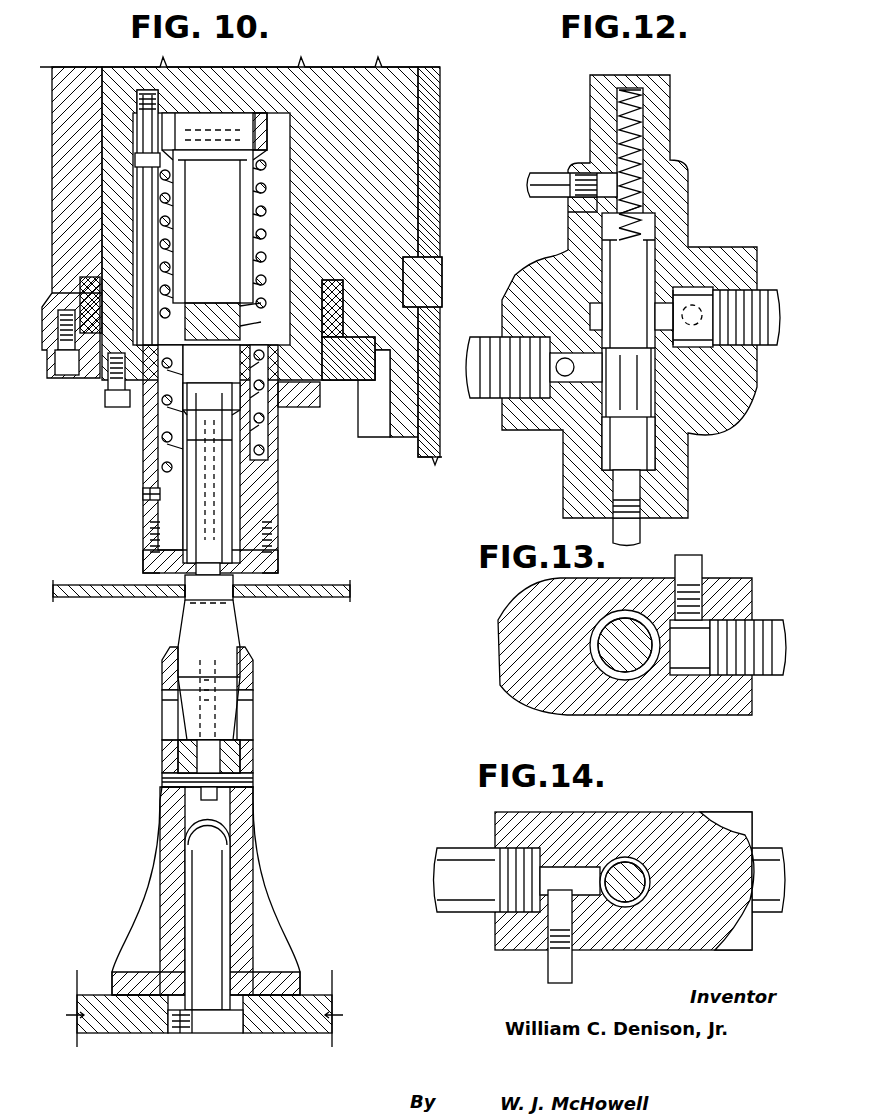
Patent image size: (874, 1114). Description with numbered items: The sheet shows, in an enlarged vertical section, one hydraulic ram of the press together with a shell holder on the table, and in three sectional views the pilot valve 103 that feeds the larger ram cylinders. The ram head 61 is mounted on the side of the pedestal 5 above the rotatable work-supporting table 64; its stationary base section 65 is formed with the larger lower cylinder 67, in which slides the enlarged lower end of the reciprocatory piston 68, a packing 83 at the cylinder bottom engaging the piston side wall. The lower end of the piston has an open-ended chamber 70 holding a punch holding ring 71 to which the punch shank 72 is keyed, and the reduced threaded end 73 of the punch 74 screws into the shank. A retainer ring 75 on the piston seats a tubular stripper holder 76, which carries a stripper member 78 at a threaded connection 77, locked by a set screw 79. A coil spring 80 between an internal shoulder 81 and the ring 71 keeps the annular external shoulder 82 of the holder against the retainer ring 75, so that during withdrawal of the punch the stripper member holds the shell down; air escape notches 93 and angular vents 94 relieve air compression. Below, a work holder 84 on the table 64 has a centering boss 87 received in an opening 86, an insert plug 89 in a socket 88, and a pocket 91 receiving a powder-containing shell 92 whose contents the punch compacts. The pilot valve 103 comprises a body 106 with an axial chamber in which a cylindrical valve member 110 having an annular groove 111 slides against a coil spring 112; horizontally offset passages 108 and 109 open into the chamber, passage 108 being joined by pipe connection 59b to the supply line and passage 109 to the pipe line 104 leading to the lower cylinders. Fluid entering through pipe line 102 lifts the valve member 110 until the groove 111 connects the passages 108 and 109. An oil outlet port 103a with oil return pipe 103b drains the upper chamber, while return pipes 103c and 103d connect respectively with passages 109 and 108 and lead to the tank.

In FIG. 10, the pedestal 5 is at (442, 157).
In FIG. 10, the ram head 61 is at (52, 207).
In FIG. 10, the work-supporting table 64 is at (318, 995).
In FIG. 10, the stationary base section 65 is at (408, 224).
In FIG. 10, the lower cylinder 67 is at (100, 238).
In FIG. 10, the reciprocatory piston 68 is at (113, 141).
In FIG. 10, the open-ended chamber 70 is at (140, 263).
In FIG. 10, the punch holding ring 71 is at (270, 122).
In FIG. 10, the punch shank 72 is at (214, 226).
In FIG. 10, the reduced threaded end 73 is at (128, 407).
In FIG. 10, the punch 74 is at (215, 463).
In FIG. 10, the retainer ring 75 is at (318, 400).
In FIG. 10, the tubular stripper holder 76 is at (268, 478).
In FIG. 10, the threaded connection 77 is at (150, 540).
In FIG. 10, the stripper member 78 is at (268, 535).
In FIG. 10, the set screw 79 is at (143, 493).
In FIG. 10, the coil spring 80 is at (221, 243).
In FIG. 10, the internal shoulder 81 is at (143, 467).
In FIG. 10, the annular external shoulder 82 is at (118, 368).
In FIG. 10, the packing 83 is at (338, 330).
In FIG. 10, the work holder 84 is at (255, 836).
In FIG. 10, the opening 86 is at (188, 1035).
In FIG. 10, the centering boss 87 is at (236, 1035).
In FIG. 10, the socket 88 is at (235, 757).
In FIG. 10, the insert plug 89 is at (197, 758).
In FIG. 10, the pocket 91 is at (178, 725).
In FIG. 10, the powder-containing shell 92 is at (225, 710).
In FIG. 10, the air escape notch 93 is at (270, 566).
In FIG. 10, the angular vent 94 is at (150, 566).
In FIG. 12, the pipe line 102 is at (640, 532).
In FIG. 12, the pilot valve 103 is at (717, 413).
In FIG. 13, the pilot valve 103 is at (723, 580).
In FIG. 14, the pilot valve 103 is at (687, 820).
In FIG. 12, the oil outlet port 103a is at (610, 178).
In FIG. 12, the oil return pipe 103b is at (560, 163).
In FIG. 12, the return pipe 103c is at (690, 295).
In FIG. 13, the return pipe 103c is at (683, 569).
In FIG. 12, the return pipe 103d is at (565, 358).
In FIG. 14, the return pipe 103d is at (572, 968).
In FIG. 12, the pipe line 104 is at (757, 290).
In FIG. 13, the pipe line 104 is at (775, 610).
In FIG. 12, the valve body 106 is at (550, 428).
In FIG. 12, the passage 108 is at (587, 372).
In FIG. 12, the passage 109 is at (710, 287).
In FIG. 12, the cylindrical valve member 110 is at (628, 338).
In FIG. 13, the cylindrical valve member 110 is at (640, 665).
In FIG. 14, the cylindrical valve member 110 is at (623, 865).
In FIG. 12, the annular groove 111 is at (628, 443).
In FIG. 12, the coil spring 112 is at (645, 110).
In FIG. 12, the pipe connection 59b is at (502, 383).
In FIG. 14, the pipe connection 59b is at (452, 850).